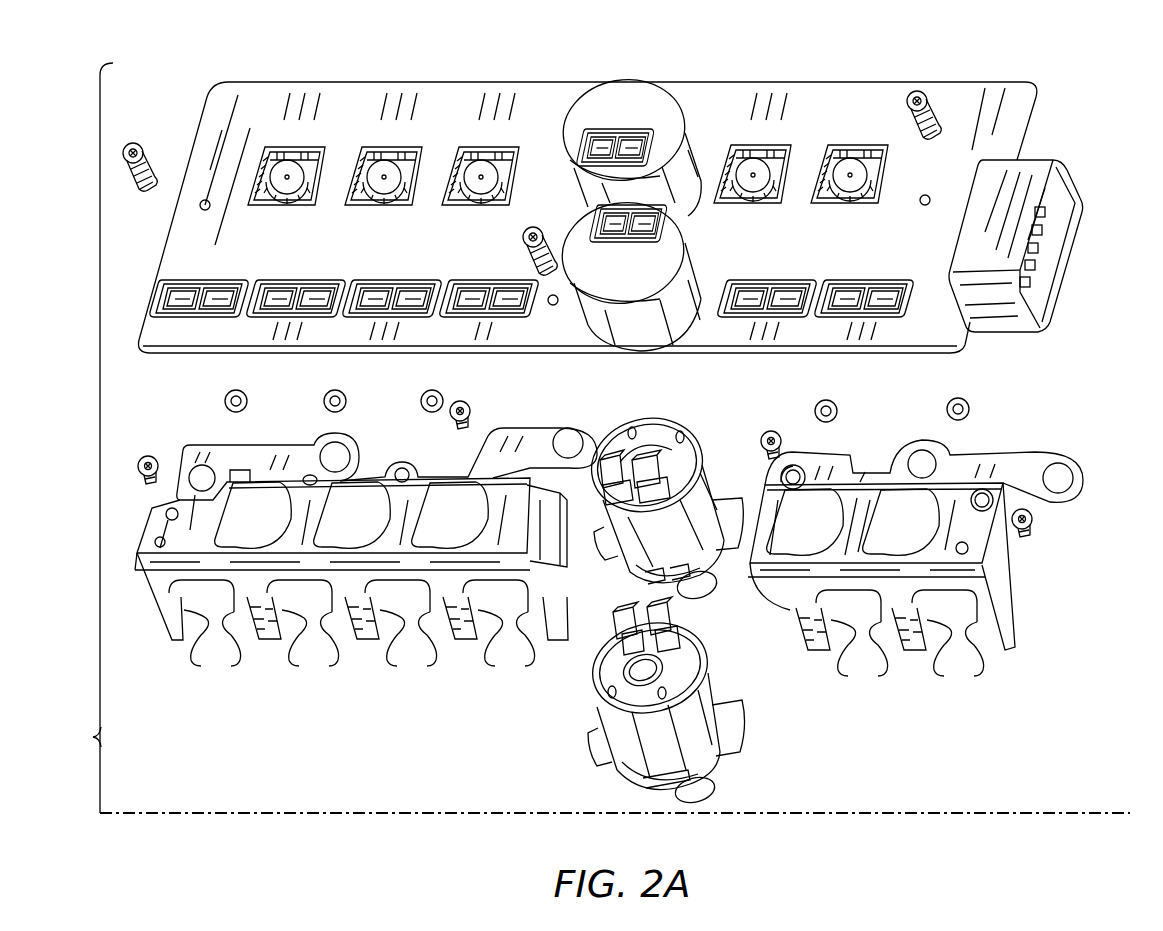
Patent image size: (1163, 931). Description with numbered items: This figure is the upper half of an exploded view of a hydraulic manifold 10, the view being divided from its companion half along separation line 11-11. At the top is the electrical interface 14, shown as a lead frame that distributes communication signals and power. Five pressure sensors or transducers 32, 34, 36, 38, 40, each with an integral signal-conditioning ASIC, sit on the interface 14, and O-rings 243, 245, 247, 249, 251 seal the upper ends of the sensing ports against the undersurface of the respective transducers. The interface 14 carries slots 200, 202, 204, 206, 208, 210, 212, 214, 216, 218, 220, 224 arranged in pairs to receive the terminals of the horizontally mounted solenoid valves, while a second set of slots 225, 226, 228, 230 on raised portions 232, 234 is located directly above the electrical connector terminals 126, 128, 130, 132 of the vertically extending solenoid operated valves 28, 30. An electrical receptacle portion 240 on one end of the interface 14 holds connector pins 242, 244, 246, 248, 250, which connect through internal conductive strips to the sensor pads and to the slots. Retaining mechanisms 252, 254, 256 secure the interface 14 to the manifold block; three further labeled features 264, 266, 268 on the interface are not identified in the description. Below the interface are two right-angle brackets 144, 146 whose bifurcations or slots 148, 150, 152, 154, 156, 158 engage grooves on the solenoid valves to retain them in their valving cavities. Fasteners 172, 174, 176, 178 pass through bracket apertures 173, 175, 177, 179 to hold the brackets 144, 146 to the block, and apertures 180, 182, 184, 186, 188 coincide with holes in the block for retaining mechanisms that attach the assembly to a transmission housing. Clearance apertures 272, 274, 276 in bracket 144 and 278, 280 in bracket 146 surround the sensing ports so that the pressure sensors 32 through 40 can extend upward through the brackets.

The hydraulic manifold 10 is at (86, 438).
The separation line 11 is at (600, 816).
The electrical interface 14 is at (818, 84).
The solenoid operated valve 28 is at (692, 472).
The solenoid operated valve 30 is at (705, 672).
The pressure transducer 32 is at (302, 182).
The pressure transducer 34 is at (400, 182).
The pressure transducer 36 is at (500, 182).
The pressure transducer 38 is at (772, 182).
The pressure transducer 40 is at (848, 175).
The electrical connector terminal 126 is at (615, 630).
The electrical connector terminal 128 is at (672, 607).
The electrical connector terminal 130 is at (610, 455).
The electrical connector terminal 132 is at (645, 440).
The bracket 144 is at (197, 468).
The bracket 146 is at (1000, 448).
The bracket slot 148 is at (205, 628).
The bracket slot 150 is at (303, 628).
The bracket slot 152 is at (401, 628).
The bracket slot 154 is at (499, 628).
The bracket slot 156 is at (852, 636).
The bracket slot 158 is at (948, 636).
The retaining fastener 172 is at (149, 455).
The bracket aperture 173 is at (160, 512).
The retaining fastener 174 is at (461, 400).
The bracket aperture 175 is at (545, 525).
The retaining fastener 176 is at (775, 435).
The bracket aperture 177 is at (805, 452).
The retaining fastener 178 is at (1033, 518).
The bracket aperture 179 is at (987, 532).
The aperture 180 is at (202, 464).
The aperture 182 is at (333, 441).
The aperture 184 is at (572, 428).
The aperture 186 is at (921, 450).
The aperture 188 is at (1058, 463).
The slot 200 is at (188, 292).
The slot 202 is at (222, 292).
The slot 204 is at (290, 292).
The slot 206 is at (312, 292).
The slot 208 is at (385, 292).
The slot 210 is at (405, 292).
The slot 212 is at (482, 292).
The slot 214 is at (518, 292).
The slot 216 is at (760, 292).
The slot 218 is at (782, 292).
The slot 220 is at (852, 292).
The slot 224 is at (875, 292).
The slot 225 is at (642, 236).
The slot 226 is at (605, 230).
The slot 228 is at (605, 144).
The slot 230 is at (634, 144).
The raised portion 232 is at (660, 322).
The raised portion 234 is at (620, 97).
The electrical receptacle portion 240 is at (1068, 198).
The electrical connector pin 242 is at (1046, 212).
The electrical connector pin 244 is at (1043, 231).
The electrical connector pin 246 is at (1040, 249).
The electrical connector pin 248 is at (1036, 266).
The electrical connector pin 250 is at (1031, 284).
The O-ring 243 is at (245, 395).
The O-ring 245 is at (348, 404).
The O-ring 247 is at (428, 392).
The O-ring 249 is at (838, 408).
The O-ring 251 is at (963, 400).
The retaining fastener 252 is at (140, 150).
The retaining fastener 254 is at (538, 226).
The retaining fastener 256 is at (930, 102).
The mounting hole 264 is at (200, 204).
The mounting hole 266 is at (555, 306).
The mounting hole 268 is at (927, 196).
The clearance aperture 272 is at (240, 525).
The clearance aperture 274 is at (338, 525).
The clearance aperture 276 is at (435, 525).
The clearance aperture 278 is at (781, 531).
The clearance aperture 280 is at (879, 531).